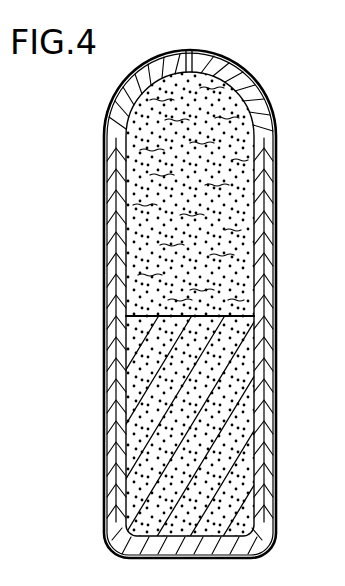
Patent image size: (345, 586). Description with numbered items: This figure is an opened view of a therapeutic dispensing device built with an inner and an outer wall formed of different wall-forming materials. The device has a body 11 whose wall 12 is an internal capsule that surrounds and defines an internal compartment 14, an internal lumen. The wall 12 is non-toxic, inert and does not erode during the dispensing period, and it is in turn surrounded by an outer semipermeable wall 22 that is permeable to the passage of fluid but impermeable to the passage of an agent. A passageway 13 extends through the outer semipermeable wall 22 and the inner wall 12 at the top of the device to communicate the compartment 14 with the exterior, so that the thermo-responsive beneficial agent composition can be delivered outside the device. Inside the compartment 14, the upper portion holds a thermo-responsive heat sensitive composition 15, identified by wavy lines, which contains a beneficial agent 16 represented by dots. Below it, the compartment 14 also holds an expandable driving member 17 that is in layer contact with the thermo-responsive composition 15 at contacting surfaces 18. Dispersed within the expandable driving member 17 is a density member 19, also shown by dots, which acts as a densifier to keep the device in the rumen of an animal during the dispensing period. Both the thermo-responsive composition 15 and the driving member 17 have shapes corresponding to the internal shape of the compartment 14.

The body 11 is at (278, 147).
The wall 12 is at (265, 183).
The passageway 13 is at (196, 58).
The internal compartment 14 is at (263, 276).
The thermo-responsive heat sensitive composition 15 is at (158, 132).
The beneficial agent 16 is at (152, 142).
The expandable driving member 17 is at (250, 343).
The contacting surfaces 18 is at (135, 320).
The density member 19 is at (148, 412).
The outer semipermeable wall 22 is at (268, 418).